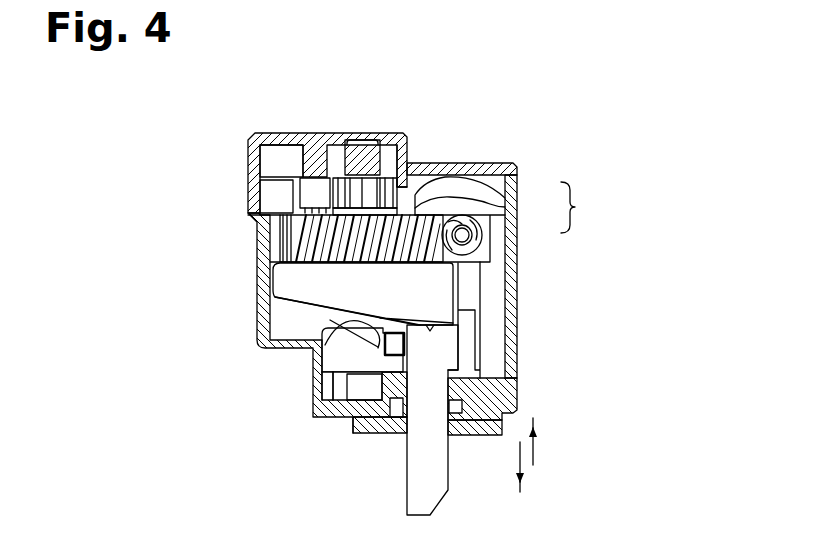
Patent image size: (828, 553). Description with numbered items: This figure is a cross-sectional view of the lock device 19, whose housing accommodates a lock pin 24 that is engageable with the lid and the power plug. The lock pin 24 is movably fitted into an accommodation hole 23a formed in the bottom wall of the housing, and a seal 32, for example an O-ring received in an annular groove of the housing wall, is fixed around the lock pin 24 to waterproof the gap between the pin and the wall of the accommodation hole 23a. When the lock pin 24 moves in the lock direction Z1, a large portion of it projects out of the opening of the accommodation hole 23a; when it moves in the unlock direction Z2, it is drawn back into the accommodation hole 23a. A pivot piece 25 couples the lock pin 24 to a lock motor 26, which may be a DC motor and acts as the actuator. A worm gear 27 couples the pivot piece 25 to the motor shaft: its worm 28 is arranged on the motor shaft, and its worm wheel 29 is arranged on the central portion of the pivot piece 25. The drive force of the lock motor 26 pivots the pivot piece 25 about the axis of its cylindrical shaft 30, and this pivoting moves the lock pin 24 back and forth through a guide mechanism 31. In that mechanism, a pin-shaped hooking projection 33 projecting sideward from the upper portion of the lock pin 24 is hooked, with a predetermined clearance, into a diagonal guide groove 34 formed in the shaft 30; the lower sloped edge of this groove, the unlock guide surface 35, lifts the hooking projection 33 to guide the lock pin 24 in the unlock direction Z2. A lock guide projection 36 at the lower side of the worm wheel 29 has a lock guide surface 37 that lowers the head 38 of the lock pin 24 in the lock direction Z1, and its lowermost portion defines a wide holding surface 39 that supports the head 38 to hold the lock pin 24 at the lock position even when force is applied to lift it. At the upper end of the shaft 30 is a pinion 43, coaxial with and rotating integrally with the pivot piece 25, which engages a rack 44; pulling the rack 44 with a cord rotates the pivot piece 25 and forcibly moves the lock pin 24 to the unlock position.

The lock device 19 is at (230, 126).
The accommodation hole 23a is at (441, 388).
The lock pin 24 is at (407, 493).
The pivot piece 25 is at (258, 258).
The lock motor 26 is at (494, 172).
The worm gear 27 is at (586, 207).
The worm 28 is at (482, 224).
The worm wheel 29 is at (505, 203).
The shaft 30 is at (358, 155).
The guide mechanism 31 is at (270, 308).
The seal 32 is at (390, 434).
The hooking projection 33 is at (393, 334).
The guide groove 34 is at (357, 348).
The unlock guide surface 35 is at (330, 322).
The lock guide projection 36 is at (286, 278).
The lock guide surface 37 is at (358, 318).
The head 38 is at (443, 348).
The holding surface 39 is at (430, 326).
The pinion 43 is at (401, 188).
The rack 44 is at (300, 191).
The lock direction Z1 is at (520, 463).
The unlock direction Z2 is at (537, 443).